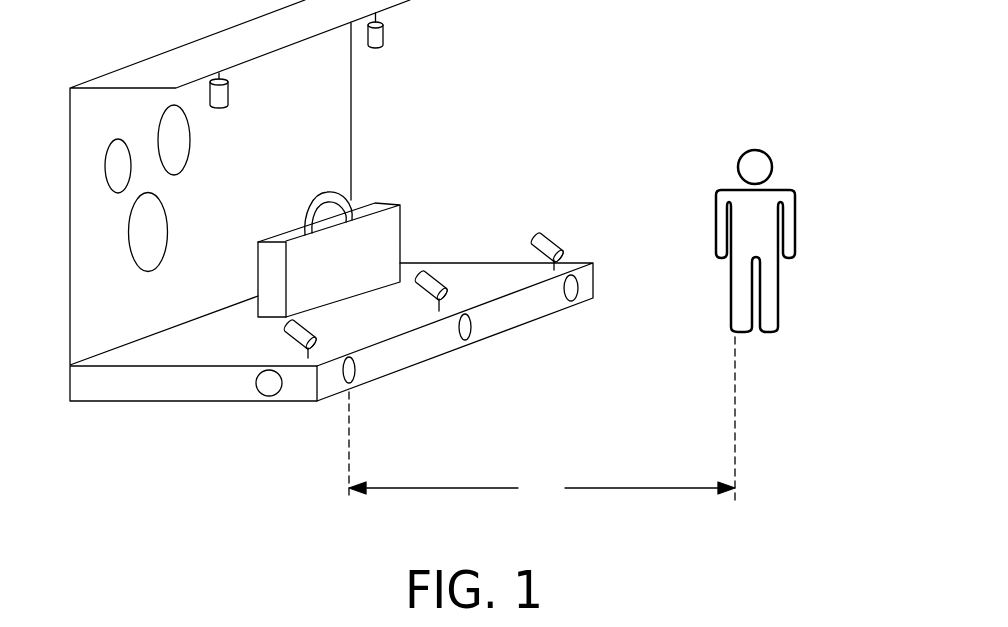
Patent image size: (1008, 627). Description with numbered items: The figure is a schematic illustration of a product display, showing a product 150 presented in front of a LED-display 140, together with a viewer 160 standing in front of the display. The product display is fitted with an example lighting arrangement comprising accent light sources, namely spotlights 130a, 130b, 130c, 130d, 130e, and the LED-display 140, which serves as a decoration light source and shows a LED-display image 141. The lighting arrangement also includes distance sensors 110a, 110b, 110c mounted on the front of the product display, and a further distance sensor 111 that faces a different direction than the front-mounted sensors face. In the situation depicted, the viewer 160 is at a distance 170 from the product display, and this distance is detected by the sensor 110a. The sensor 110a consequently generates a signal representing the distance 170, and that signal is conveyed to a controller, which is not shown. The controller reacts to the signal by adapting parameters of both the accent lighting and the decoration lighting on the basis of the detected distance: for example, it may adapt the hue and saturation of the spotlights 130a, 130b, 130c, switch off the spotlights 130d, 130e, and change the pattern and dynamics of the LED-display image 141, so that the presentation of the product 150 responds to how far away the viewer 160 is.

The distance sensor 110a is at (356, 365).
The distance sensor 110b is at (471, 325).
The distance sensor 110c is at (578, 287).
The distance sensor 111 is at (269, 396).
The spotlight 130a is at (295, 332).
The spotlight 130b is at (433, 272).
The spotlight 130c is at (542, 232).
The spotlight 130d is at (229, 93).
The spotlight 130e is at (384, 33).
The LED-display 140 is at (352, 103).
The LED-display image 141 is at (129, 185).
The product 150 is at (400, 205).
The viewer 160 is at (772, 305).
The distance 170 is at (542, 419).